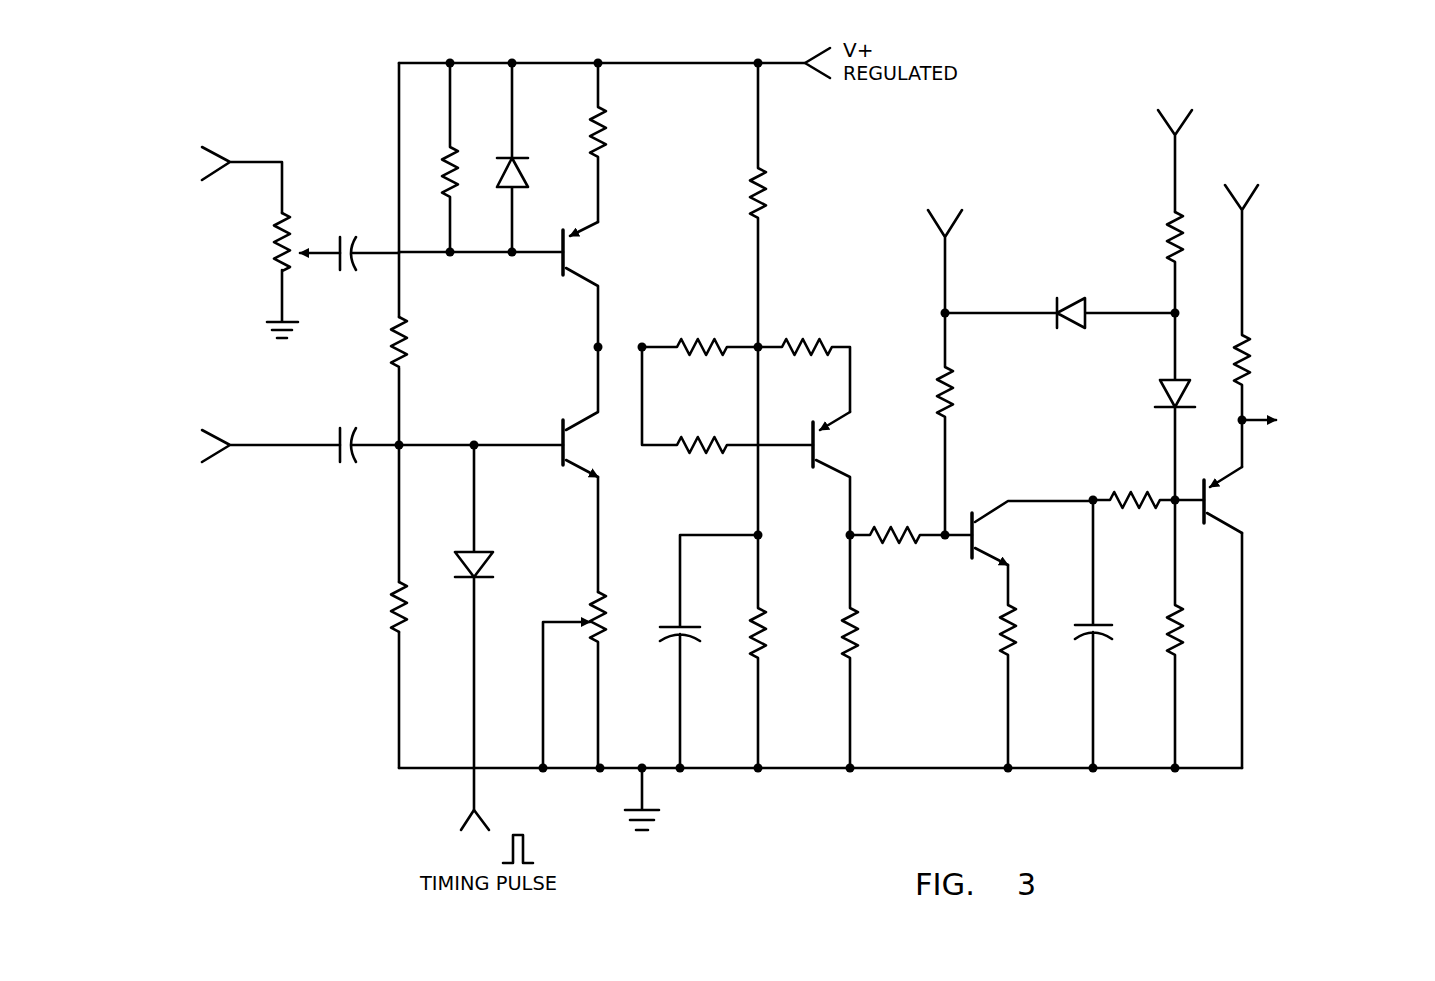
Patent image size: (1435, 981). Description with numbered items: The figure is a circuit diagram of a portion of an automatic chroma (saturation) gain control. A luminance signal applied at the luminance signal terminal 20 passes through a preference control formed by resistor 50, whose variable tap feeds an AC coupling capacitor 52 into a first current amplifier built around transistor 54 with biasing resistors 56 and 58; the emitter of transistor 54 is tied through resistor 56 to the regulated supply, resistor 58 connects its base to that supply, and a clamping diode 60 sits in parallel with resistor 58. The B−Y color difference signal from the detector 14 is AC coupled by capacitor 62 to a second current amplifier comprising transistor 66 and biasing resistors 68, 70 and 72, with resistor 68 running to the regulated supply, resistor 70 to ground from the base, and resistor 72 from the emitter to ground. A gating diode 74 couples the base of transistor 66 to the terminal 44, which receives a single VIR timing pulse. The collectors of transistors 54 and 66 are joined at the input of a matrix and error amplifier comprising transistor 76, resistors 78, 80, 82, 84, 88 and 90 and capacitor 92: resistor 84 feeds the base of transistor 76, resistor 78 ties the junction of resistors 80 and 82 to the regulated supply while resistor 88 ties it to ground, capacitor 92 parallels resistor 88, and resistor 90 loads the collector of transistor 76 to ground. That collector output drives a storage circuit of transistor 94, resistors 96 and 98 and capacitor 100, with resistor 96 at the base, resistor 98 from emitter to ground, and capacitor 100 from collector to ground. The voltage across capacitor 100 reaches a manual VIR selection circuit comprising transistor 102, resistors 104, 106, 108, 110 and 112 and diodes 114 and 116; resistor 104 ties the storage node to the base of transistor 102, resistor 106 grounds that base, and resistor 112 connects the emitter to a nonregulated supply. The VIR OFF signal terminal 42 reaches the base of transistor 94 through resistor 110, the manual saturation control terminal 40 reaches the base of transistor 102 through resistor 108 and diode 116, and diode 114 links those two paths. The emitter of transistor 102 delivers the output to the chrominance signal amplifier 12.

The chrominance signal amplifier 12 is at (1326, 422).
The detector 14 is at (221, 455).
The luminance signal terminal 20 is at (265, 157).
The manual saturation control terminal 40 is at (1164, 126).
The VIR OFF signal terminal 42 is at (931, 226).
The terminal 44 is at (467, 813).
The resistor 50 is at (280, 222).
The capacitor 52 is at (345, 237).
The transistor 54 is at (584, 253).
The resistor 56 is at (612, 137).
The resistor 58 is at (460, 168).
The clamping diode 60 is at (533, 170).
The capacitor 62 is at (346, 428).
The transistor 66 is at (580, 448).
The resistor 68 is at (414, 345).
The resistor 70 is at (392, 585).
The resistor 72 is at (613, 616).
The diode 74 is at (492, 573).
The transistor 76 is at (830, 448).
The resistor 78 is at (771, 193).
The resistor 80 is at (713, 339).
The resistor 82 is at (806, 339).
The resistor 84 is at (713, 438).
The resistor 88 is at (772, 633).
The resistor 90 is at (863, 631).
The capacitor 92 is at (702, 633).
The transistor 94 is at (992, 531).
The resistor 96 is at (893, 542).
The resistor 98 is at (999, 629).
The capacitor 100 is at (1116, 629).
The transistor 102 is at (1224, 504).
The resistor 104 is at (1134, 490).
The resistor 106 is at (1189, 633).
The resistor 108 is at (1165, 233).
The resistor 110 is at (959, 386).
The resistor 112 is at (1254, 359).
The diode 114 is at (1069, 296).
The diode 116 is at (1161, 396).